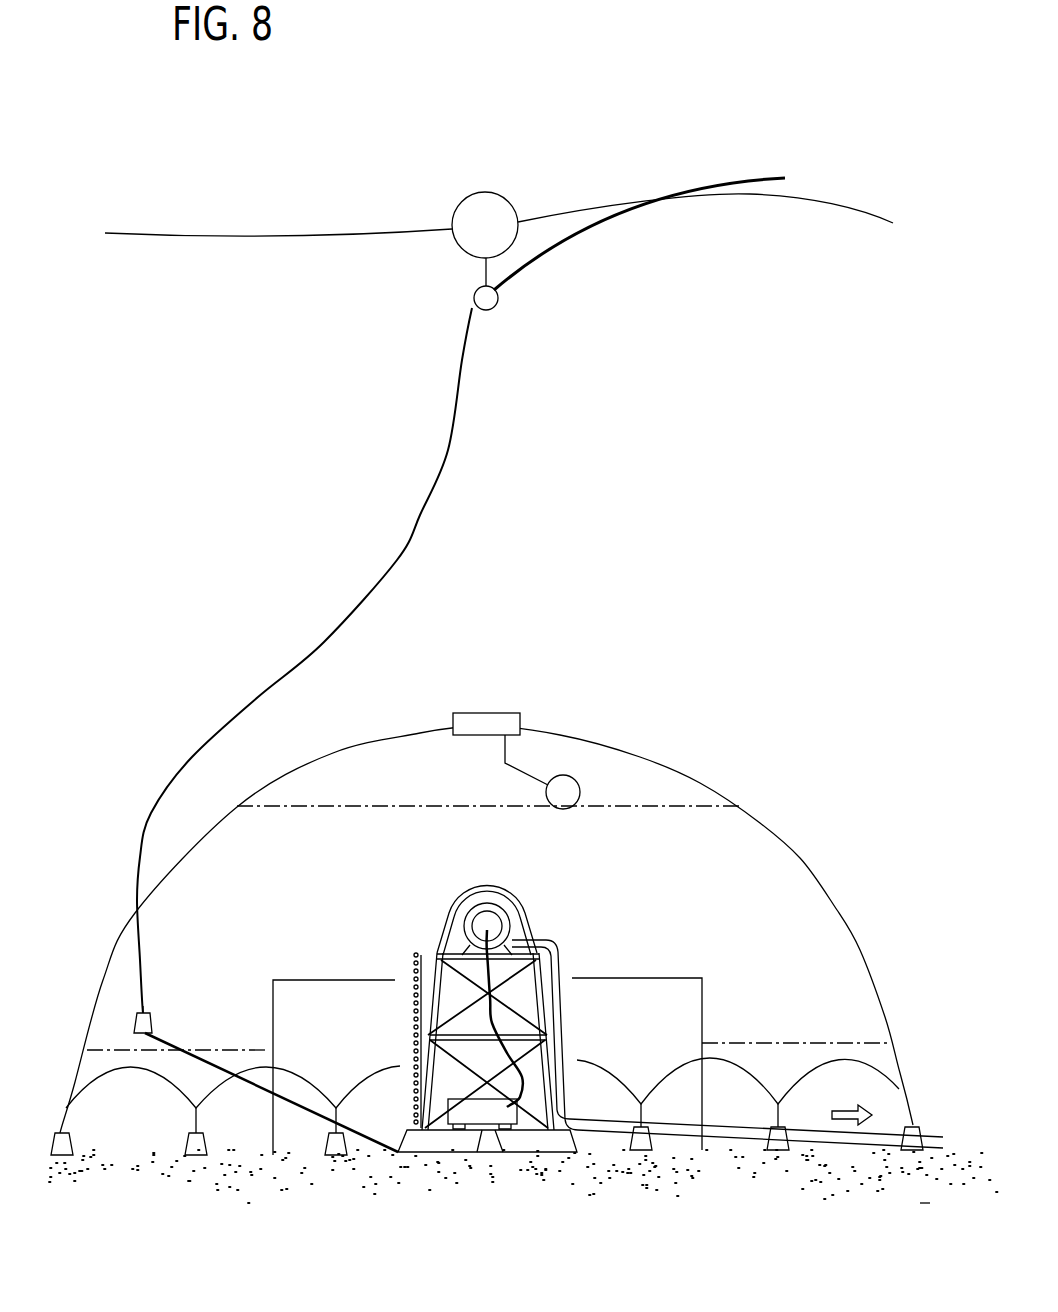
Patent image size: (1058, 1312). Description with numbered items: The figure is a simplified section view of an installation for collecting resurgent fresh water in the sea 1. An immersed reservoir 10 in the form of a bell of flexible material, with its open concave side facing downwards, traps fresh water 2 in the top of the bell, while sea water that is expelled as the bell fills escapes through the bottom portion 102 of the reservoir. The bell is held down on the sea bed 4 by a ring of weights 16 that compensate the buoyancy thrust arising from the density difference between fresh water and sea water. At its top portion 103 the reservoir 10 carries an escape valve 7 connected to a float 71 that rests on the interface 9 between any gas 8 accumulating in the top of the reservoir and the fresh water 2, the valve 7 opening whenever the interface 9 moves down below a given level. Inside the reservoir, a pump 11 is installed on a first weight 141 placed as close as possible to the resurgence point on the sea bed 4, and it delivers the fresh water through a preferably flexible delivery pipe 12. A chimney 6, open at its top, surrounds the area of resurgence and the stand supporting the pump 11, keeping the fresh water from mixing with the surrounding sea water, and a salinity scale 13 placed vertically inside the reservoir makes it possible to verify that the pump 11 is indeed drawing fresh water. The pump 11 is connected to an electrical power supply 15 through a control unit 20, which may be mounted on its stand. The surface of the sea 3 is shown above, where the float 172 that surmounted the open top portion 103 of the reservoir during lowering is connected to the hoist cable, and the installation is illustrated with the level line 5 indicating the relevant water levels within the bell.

The sea 1 is at (668, 400).
The fresh water 2 is at (243, 912).
The sea surface 3 is at (333, 228).
The sea bed 4 is at (500, 1212).
The left level line / structure 5 is at (250, 1046).
The chimney 6 is at (590, 976).
The escape valve 7 is at (526, 727).
The float 71 is at (569, 789).
The gas 8 is at (400, 789).
The interface 9 is at (642, 808).
The immersed reservoir 10 is at (801, 856).
The bottom portion of the reservoir 102 is at (901, 1071).
The top portion of the reservoir 103 is at (448, 722).
The pump 11 is at (508, 905).
The delivery pipe 12 is at (759, 1118).
The salinity scale 13 is at (418, 940).
The first weight 141 is at (424, 1137).
The electrical power supply 15 is at (445, 462).
The weights 16 is at (194, 1141).
The float 172 is at (492, 212).
The control unit 20 is at (474, 1109).